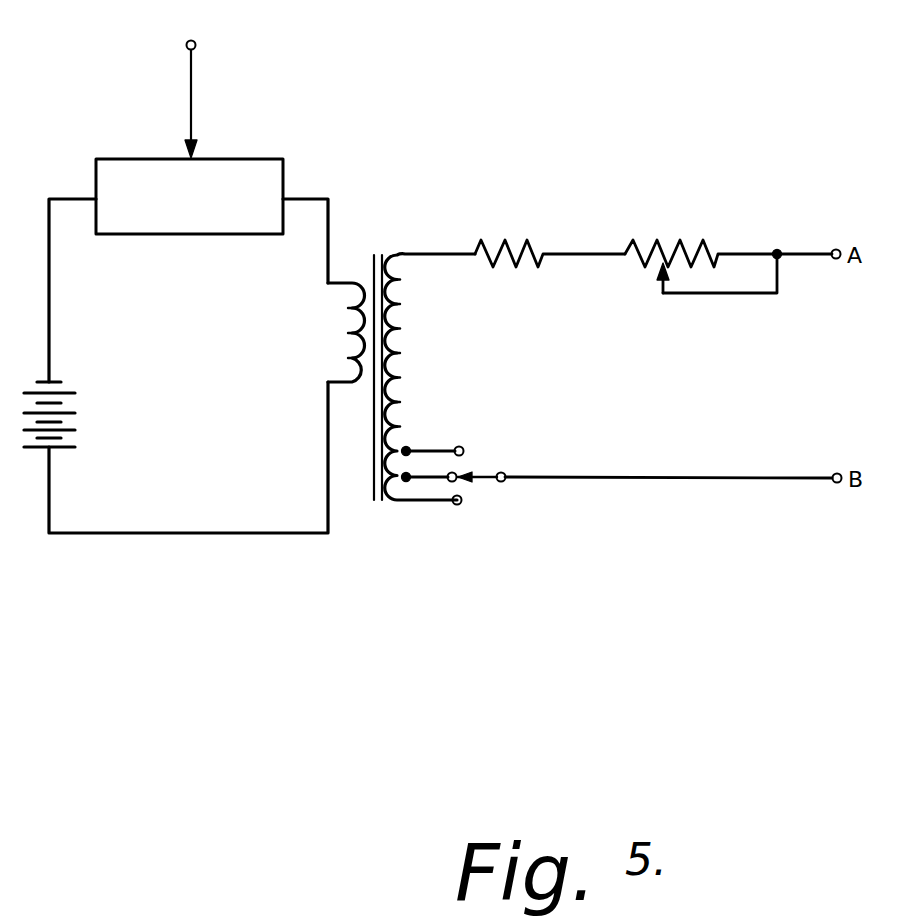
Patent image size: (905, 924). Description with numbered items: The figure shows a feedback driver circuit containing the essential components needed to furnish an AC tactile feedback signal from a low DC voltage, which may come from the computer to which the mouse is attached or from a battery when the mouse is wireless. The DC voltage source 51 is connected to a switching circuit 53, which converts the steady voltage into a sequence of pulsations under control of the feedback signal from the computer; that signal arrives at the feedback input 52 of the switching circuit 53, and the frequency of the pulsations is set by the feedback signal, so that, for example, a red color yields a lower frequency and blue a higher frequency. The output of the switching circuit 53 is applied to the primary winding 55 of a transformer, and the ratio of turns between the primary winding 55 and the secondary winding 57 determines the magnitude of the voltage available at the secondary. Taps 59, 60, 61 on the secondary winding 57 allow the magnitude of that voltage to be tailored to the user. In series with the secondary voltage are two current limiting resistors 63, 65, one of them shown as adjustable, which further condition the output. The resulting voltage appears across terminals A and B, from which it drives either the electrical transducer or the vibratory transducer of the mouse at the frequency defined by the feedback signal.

The DC voltage source 51 is at (68, 392).
The feedback input 52 is at (196, 43).
The switching circuit 53 is at (284, 170).
The primary winding 55 is at (352, 308).
The secondary winding 57 is at (400, 503).
The tap 59 is at (461, 447).
The tap 60 is at (457, 481).
The tap 61 is at (457, 505).
The current limiting resistor 63 is at (527, 240).
The current limiting resistor 65 is at (677, 240).